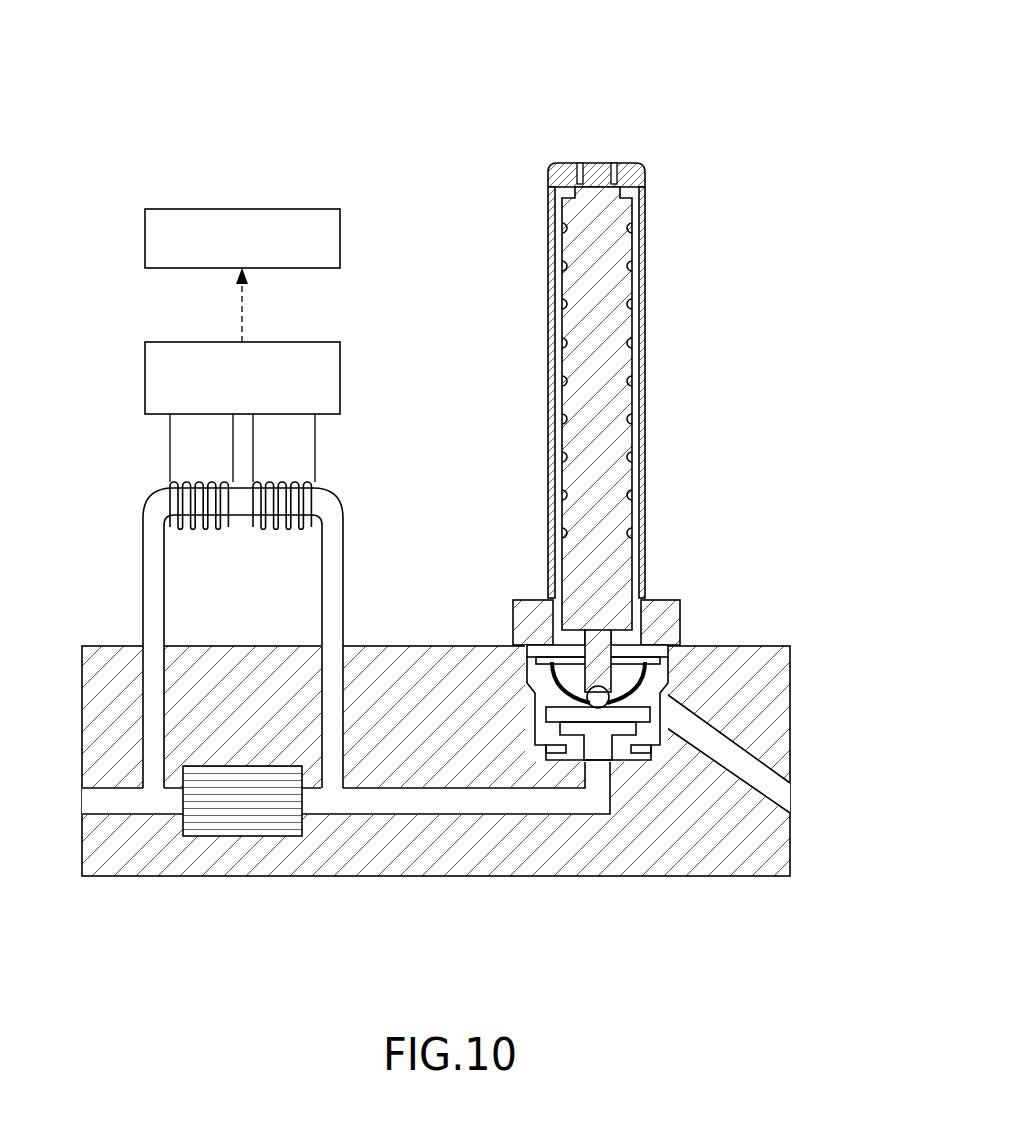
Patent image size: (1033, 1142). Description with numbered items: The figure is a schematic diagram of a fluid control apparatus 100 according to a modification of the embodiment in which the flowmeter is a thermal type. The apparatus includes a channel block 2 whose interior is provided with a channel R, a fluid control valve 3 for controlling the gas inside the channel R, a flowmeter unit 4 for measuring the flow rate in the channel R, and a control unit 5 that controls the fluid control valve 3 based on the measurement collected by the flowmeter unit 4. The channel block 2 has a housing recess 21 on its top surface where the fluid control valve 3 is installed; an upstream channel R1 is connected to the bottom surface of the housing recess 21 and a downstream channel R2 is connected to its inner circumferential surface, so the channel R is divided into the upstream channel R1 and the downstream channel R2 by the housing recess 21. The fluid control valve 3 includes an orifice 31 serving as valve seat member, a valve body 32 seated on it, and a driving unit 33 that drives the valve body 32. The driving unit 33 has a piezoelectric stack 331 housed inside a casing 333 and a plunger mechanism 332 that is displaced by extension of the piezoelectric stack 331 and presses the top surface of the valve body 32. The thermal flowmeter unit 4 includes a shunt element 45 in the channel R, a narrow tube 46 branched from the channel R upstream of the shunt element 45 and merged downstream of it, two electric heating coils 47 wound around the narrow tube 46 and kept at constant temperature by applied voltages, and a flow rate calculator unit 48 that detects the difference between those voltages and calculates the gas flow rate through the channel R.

The fluid control apparatus 100 is at (270, 73).
The channel block 2 is at (423, 646).
The fluid control valve 3 is at (738, 371).
The flowmeter unit 4 is at (108, 484).
The control unit 5 is at (145, 237).
The housing recess 21 is at (672, 713).
The orifice 31 is at (670, 695).
The valve body 32 is at (618, 745).
The driving unit 33 is at (669, 426).
The piezoelectric stack 331 is at (633, 515).
The plunger mechanism 332 is at (680, 607).
The casing 333 is at (645, 463).
The shunt element 45 is at (252, 837).
The narrow tube 46 is at (143, 571).
The electric heating coils 47 is at (200, 528).
The flow rate calculator unit 48 is at (145, 378).
The channel R is at (436, 842).
The upstream channel R1 is at (541, 803).
The downstream channel R2 is at (766, 780).